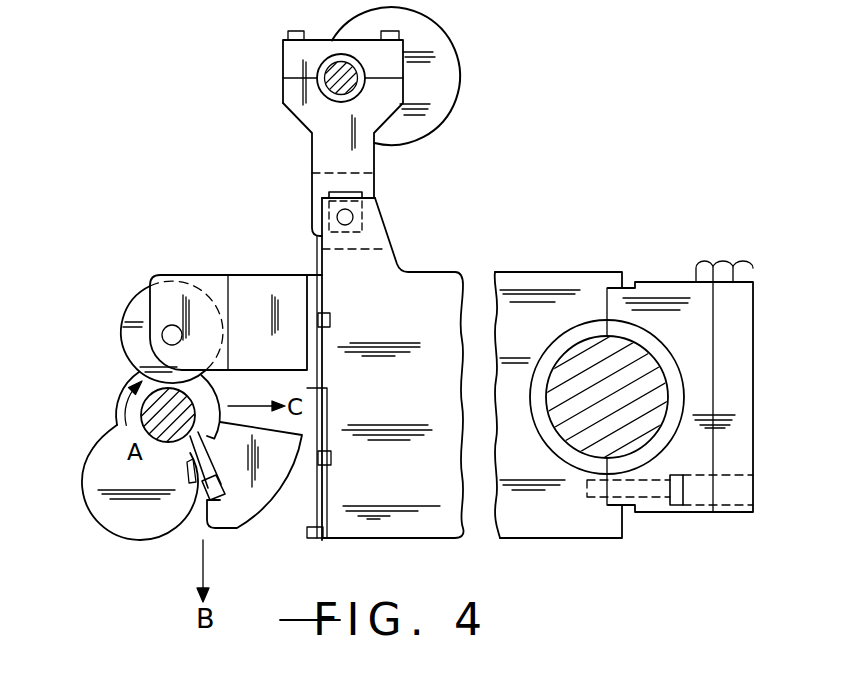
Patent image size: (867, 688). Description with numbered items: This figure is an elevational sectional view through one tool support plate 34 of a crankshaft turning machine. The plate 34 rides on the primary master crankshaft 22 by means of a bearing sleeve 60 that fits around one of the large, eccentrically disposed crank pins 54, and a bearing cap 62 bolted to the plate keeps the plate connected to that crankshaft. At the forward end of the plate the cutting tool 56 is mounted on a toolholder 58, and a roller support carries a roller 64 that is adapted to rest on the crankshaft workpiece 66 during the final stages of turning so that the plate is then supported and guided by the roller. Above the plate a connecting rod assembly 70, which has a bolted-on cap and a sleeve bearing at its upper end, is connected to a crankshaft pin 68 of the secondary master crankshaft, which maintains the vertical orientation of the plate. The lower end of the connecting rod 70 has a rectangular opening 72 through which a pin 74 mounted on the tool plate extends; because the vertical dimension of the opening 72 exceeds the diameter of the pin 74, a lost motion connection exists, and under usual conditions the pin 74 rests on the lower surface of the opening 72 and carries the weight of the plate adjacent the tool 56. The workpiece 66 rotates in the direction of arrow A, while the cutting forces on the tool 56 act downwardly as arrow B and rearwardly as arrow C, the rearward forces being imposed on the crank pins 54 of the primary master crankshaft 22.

The primary master crankshaft 22 is at (640, 357).
The tool support plate 34 is at (408, 398).
The crank pin 54 is at (668, 382).
The cutting tool 56 is at (200, 452).
The toolholder 58 is at (250, 505).
The bearing sleeve 60 is at (665, 438).
The bearing cap 62 is at (693, 513).
The roller 64 is at (140, 306).
The crankshaft workpiece 66 is at (143, 411).
The crankshaft pin 68 is at (334, 69).
The connecting rod assembly 70 is at (306, 145).
The rectangular opening 72 is at (362, 194).
The pin 74 is at (354, 219).